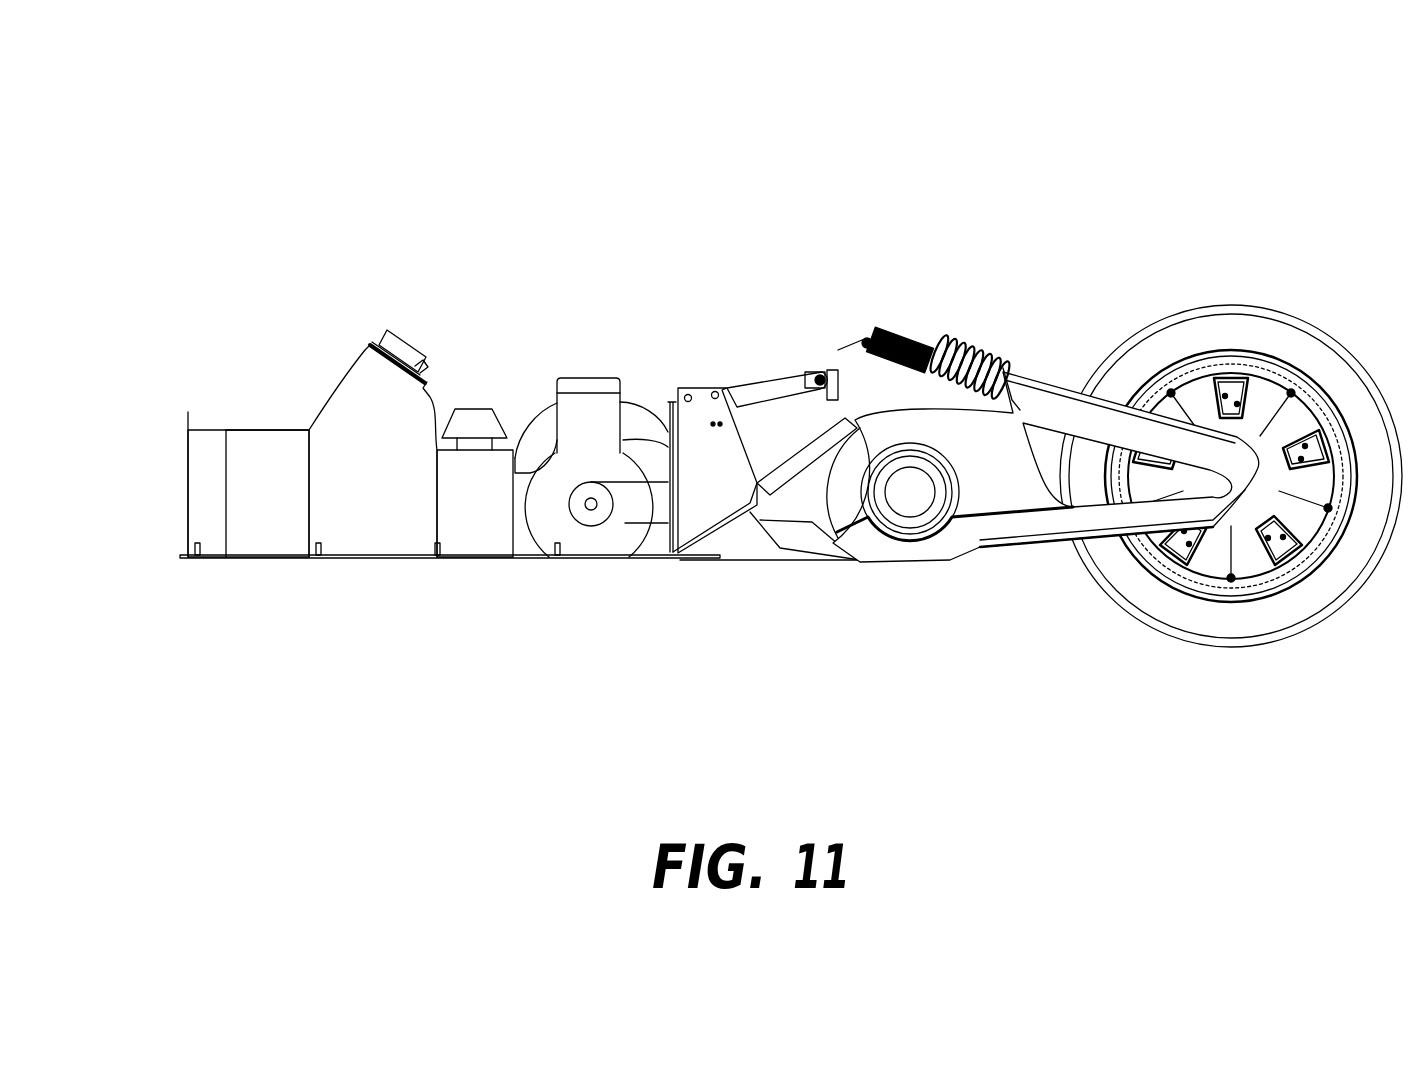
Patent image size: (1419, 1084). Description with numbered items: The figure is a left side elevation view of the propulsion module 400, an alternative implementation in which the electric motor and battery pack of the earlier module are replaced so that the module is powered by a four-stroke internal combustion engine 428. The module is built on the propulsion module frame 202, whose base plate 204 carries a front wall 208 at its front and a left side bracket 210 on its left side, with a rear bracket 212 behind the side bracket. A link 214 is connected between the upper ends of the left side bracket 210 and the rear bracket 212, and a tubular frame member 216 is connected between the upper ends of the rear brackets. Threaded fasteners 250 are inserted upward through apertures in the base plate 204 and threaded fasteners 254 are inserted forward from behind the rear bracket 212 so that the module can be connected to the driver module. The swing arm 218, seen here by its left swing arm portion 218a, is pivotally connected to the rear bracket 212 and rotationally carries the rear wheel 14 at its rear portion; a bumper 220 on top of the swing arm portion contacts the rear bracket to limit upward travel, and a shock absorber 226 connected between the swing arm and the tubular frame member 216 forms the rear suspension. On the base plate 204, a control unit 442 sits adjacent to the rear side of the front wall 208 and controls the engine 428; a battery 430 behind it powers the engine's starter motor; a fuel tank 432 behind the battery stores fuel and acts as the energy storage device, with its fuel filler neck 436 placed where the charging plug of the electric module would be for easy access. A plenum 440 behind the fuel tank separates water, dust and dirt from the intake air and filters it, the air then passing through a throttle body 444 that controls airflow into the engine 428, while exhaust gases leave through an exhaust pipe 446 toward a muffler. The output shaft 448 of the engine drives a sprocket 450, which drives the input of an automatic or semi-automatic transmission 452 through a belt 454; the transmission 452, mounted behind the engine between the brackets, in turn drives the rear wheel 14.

The rear wheel 14 is at (1300, 603).
The propulsion module frame 202 is at (446, 593).
The base plate 204 is at (277, 560).
The front wall 208 is at (187, 477).
The left side bracket 210 is at (702, 413).
The rear bracket 212 is at (857, 357).
The link 214 is at (752, 397).
The tubular frame member 216 is at (838, 362).
The swing arm 218 is at (962, 603).
The left swing arm portion 218a is at (1042, 527).
The bumper 220 is at (963, 360).
The shock absorber 226 is at (1005, 358).
The threaded fastener 250 is at (197, 557).
The threaded fastener 254 is at (812, 360).
The propulsion module 400 is at (569, 222).
The internal combustion engine 428 is at (590, 413).
The battery 430 is at (262, 457).
The fuel tank 432 is at (363, 422).
The fuel filler neck 436 is at (397, 347).
The plenum 440 is at (475, 483).
The control unit 442 is at (207, 450).
The throttle body 444 is at (538, 445).
The exhaust pipe 446 is at (643, 420).
The output shaft 448 is at (591, 515).
The sprocket 450 is at (607, 512).
The transmission 452 is at (775, 433).
The belt 454 is at (668, 537).